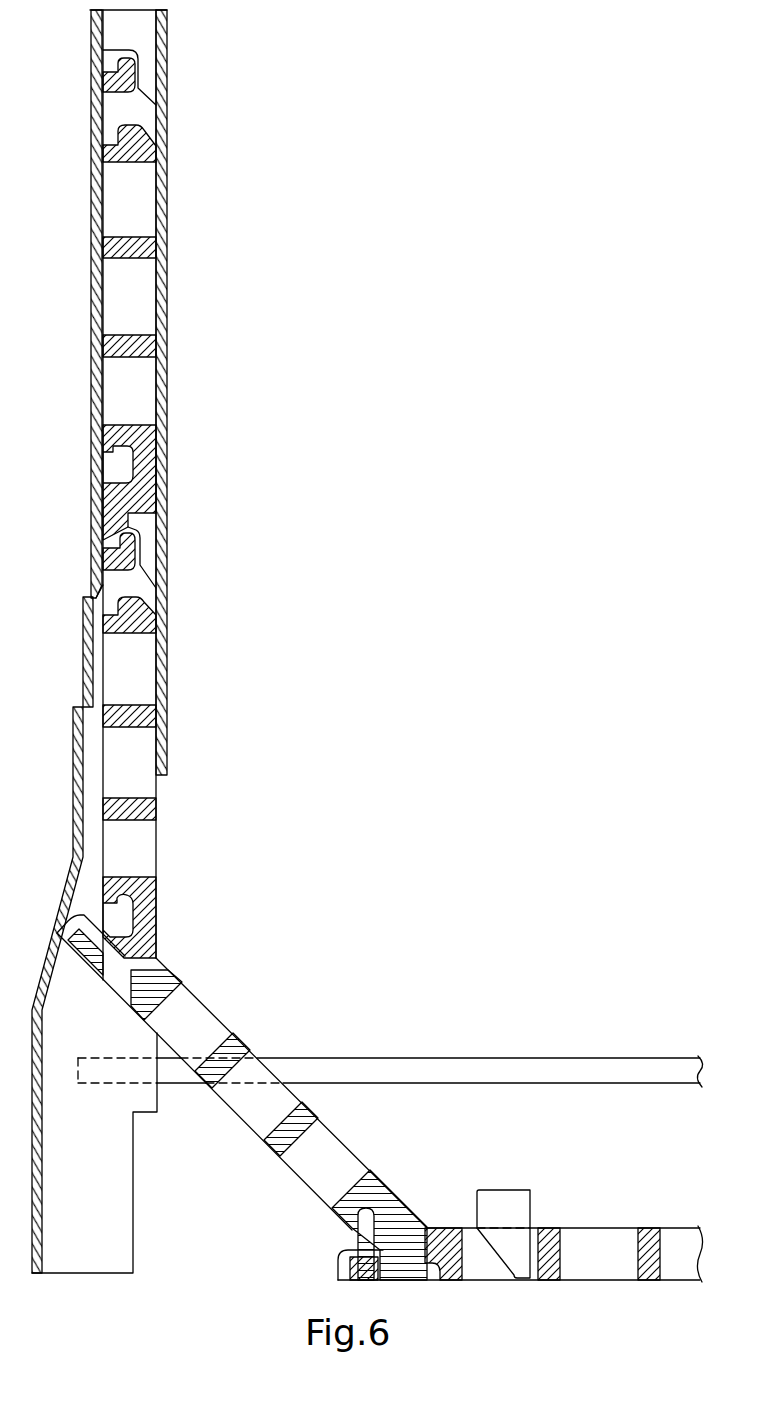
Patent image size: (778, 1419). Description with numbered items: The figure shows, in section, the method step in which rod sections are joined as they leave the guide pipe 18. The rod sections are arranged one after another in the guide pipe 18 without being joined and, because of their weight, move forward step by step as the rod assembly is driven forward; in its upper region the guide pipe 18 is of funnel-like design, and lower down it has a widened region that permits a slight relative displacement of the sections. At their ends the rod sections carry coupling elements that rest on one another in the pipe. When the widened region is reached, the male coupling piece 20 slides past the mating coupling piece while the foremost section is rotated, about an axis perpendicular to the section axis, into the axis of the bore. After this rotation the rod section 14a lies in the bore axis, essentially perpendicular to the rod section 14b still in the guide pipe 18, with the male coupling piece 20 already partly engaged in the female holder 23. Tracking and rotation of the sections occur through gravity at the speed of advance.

The guide pipe 18 is at (93, 300).
The male coupling piece 20 is at (156, 477).
The female holder 23 is at (108, 586).
The rod section 14a is at (200, 1007).
The rod section 14b is at (157, 803).